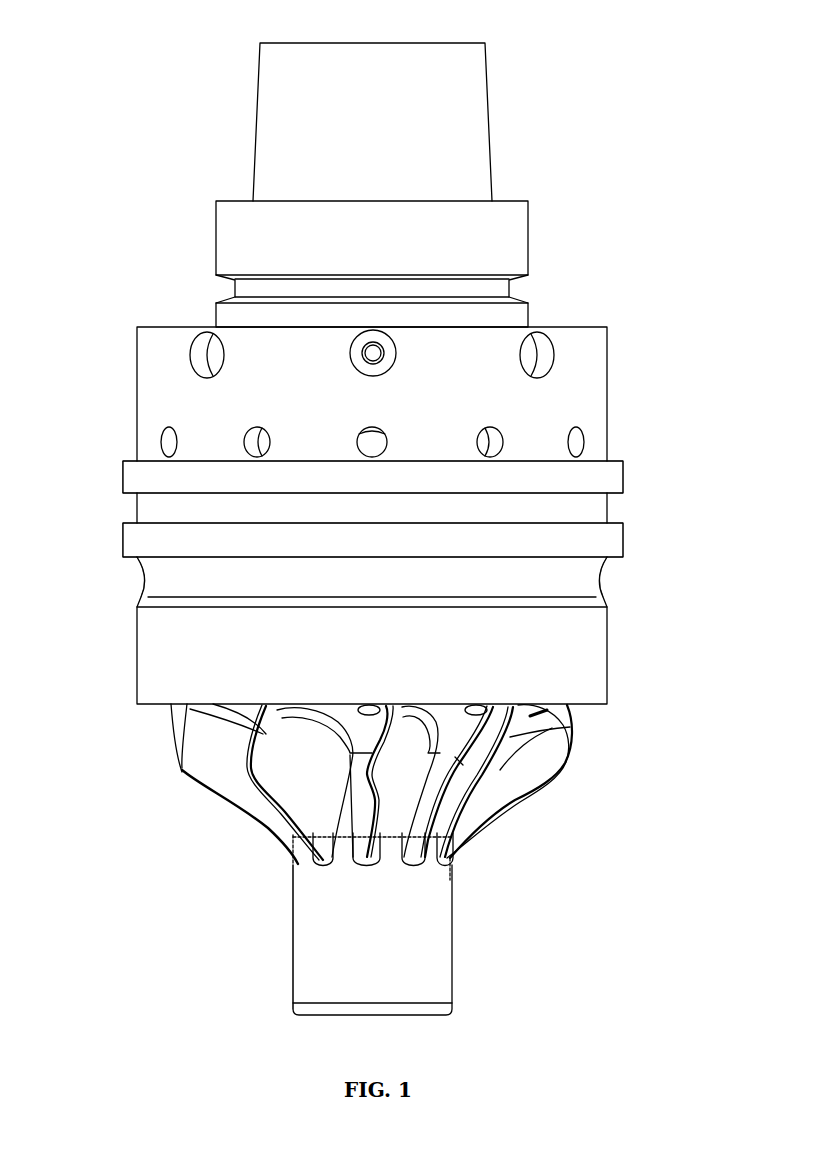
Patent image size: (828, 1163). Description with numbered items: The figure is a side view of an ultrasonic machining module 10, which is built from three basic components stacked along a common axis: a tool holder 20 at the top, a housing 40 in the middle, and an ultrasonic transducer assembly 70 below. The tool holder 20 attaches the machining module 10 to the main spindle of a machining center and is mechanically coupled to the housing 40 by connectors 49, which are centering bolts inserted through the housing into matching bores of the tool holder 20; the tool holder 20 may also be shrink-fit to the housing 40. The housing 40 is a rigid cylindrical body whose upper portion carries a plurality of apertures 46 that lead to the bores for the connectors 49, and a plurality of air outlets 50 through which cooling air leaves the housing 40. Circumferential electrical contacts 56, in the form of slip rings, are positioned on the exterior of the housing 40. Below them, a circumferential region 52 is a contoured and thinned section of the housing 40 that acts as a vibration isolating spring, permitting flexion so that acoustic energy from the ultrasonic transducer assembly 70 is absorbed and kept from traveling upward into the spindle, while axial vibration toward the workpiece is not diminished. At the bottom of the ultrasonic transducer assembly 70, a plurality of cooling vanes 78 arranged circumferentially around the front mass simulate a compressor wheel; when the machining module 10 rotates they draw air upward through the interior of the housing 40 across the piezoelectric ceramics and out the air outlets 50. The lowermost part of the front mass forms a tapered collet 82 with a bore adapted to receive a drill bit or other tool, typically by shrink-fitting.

The ultrasonic machining module 10 is at (212, 87).
The tool holder 20 is at (490, 142).
The housing 40 is at (137, 399).
The apertures 46 is at (553, 347).
The connectors 49 is at (375, 368).
The air outlets 50 is at (587, 442).
The circumferential region 52 is at (149, 574).
The circumferential electrical contacts 56 is at (123, 478).
The ultrasonic transducer assembly 70 is at (452, 939).
The vanes 78 is at (182, 767).
The tapered collet 82 is at (293, 921).